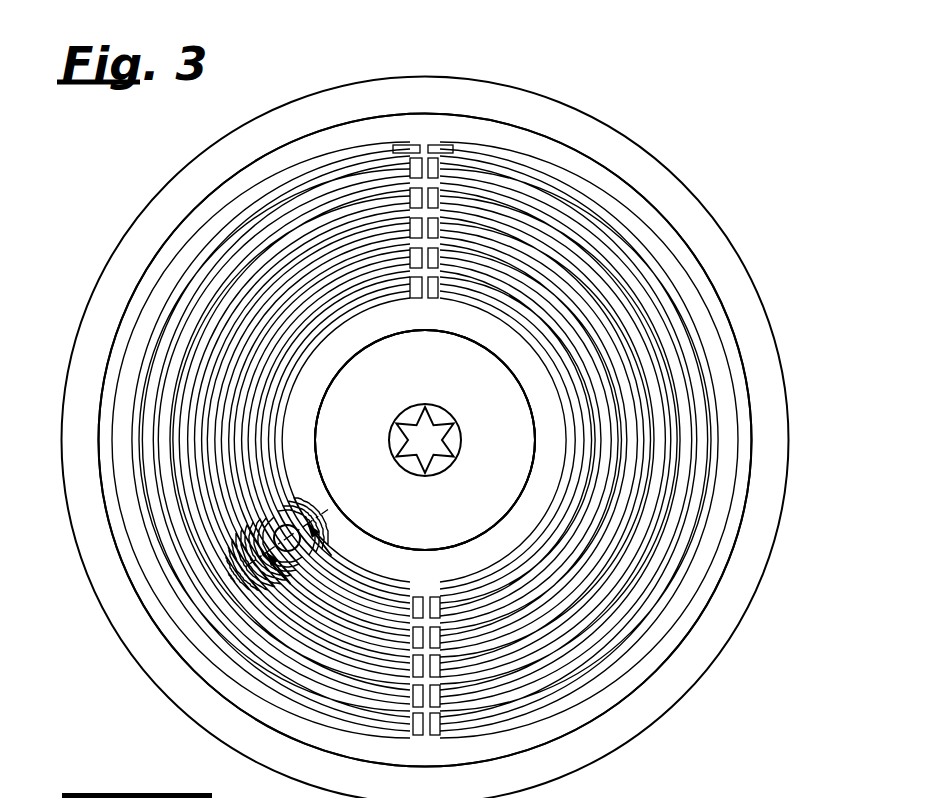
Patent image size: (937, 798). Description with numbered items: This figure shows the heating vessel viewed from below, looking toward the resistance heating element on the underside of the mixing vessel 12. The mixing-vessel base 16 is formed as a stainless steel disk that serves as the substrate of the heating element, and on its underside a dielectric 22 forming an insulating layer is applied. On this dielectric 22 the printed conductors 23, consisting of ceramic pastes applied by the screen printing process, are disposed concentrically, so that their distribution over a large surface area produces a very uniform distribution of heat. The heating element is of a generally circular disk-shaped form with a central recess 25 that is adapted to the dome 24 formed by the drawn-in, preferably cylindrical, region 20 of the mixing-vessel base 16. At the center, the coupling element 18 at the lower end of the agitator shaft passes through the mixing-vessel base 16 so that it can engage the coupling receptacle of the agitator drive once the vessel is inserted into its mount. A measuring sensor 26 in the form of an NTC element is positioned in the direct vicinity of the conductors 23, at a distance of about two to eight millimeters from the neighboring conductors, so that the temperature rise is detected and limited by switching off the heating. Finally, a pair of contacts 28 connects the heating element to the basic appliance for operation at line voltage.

The mixing vessel 12 is at (612, 102).
The mixing-vessel base 16 is at (656, 178).
The coupling element 18 is at (452, 433).
The drawn-in region 20 is at (477, 510).
The dielectric 22 is at (200, 663).
The printed conductors 23 is at (302, 267).
The dome 24 is at (340, 402).
The central recess 25 is at (528, 400).
The measuring sensor 26 is at (276, 534).
The pair of contacts 28 is at (440, 147).